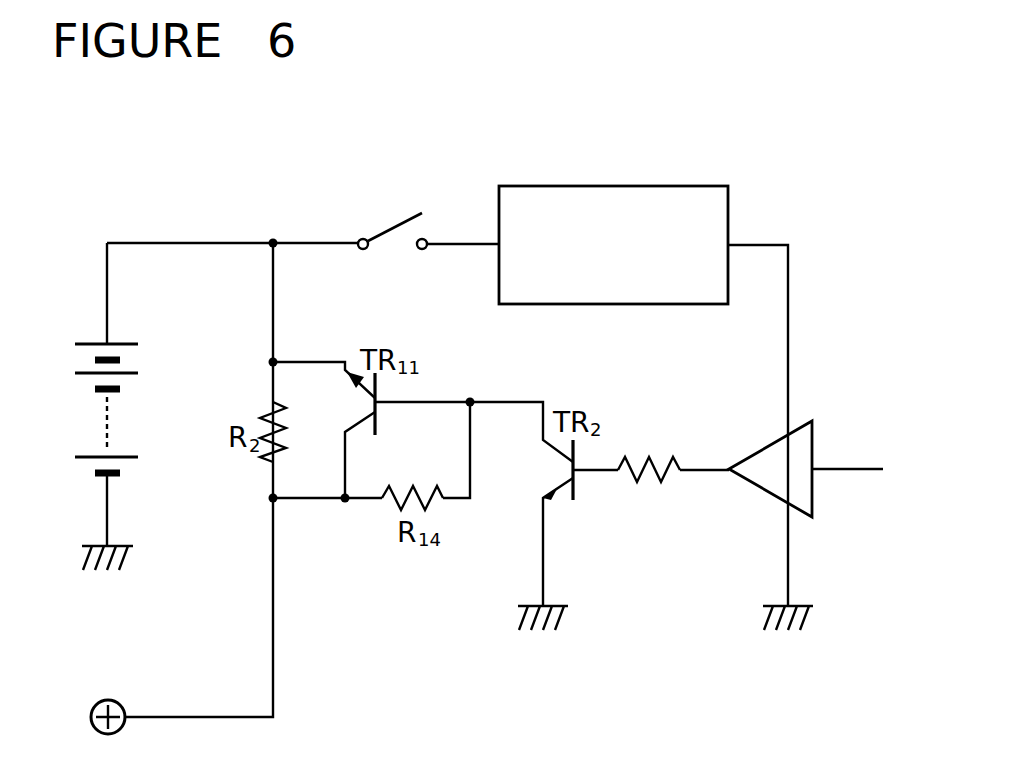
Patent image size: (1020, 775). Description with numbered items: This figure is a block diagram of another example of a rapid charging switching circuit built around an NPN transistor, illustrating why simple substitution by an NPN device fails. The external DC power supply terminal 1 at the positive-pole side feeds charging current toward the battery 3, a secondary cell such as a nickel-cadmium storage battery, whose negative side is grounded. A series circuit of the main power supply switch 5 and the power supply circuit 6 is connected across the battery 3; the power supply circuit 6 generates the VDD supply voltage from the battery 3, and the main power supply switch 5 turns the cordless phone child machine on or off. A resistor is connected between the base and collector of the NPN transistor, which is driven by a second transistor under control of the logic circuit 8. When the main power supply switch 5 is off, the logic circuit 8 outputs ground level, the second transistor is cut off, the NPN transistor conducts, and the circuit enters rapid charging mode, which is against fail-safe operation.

The external DC power supply terminal 1 is at (92, 713).
The battery 3 is at (93, 377).
The main power supply switch 5 is at (387, 228).
The power supply circuit 6 is at (577, 185).
The logic circuit 8 is at (815, 435).